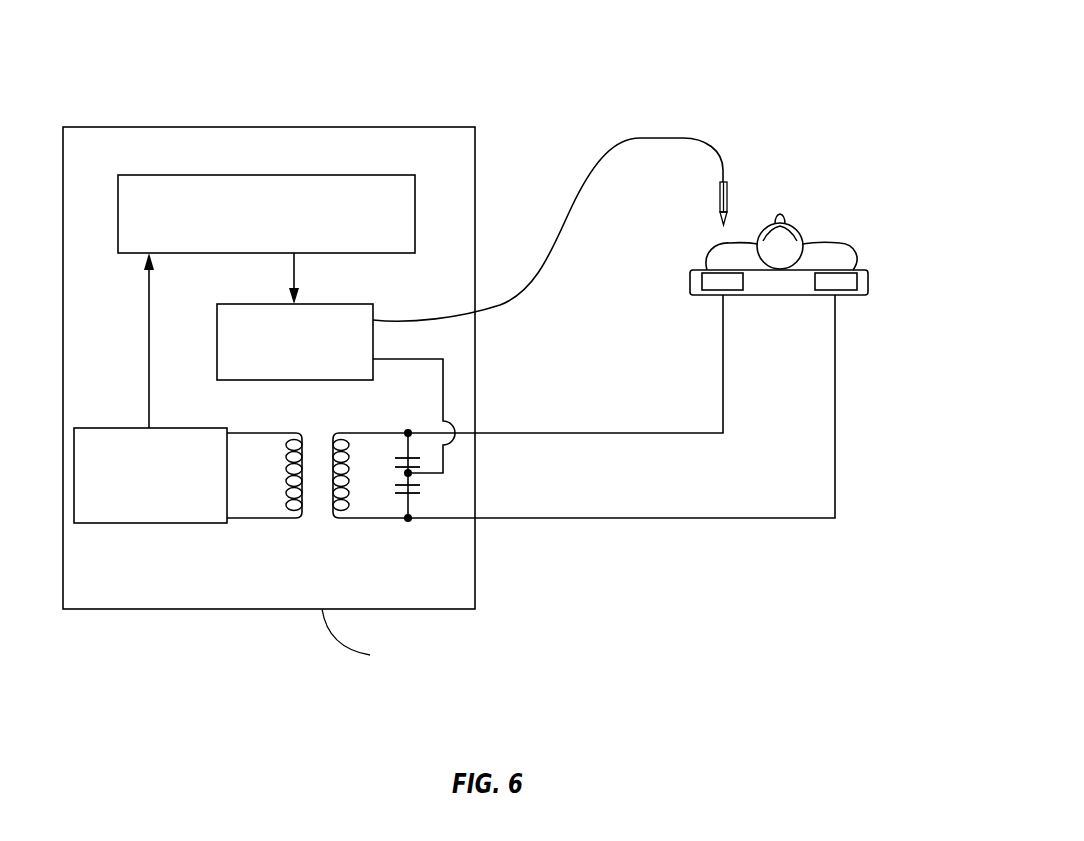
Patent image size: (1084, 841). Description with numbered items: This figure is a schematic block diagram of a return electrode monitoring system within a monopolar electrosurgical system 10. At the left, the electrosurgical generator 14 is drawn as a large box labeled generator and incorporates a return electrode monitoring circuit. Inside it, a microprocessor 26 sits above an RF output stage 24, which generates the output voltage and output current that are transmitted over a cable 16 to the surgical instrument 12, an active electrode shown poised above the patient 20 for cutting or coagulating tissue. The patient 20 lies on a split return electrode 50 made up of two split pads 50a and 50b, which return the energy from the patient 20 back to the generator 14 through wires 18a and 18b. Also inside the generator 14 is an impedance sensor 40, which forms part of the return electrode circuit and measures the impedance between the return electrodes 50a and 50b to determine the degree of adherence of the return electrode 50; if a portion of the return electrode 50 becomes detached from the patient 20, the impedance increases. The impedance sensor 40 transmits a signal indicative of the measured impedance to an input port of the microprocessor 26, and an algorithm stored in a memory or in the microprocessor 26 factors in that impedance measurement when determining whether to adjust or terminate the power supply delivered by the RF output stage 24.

The monopolar electrosurgical system 10 is at (607, 71).
The surgical instrument 12 is at (732, 194).
The electrosurgical generator 14 is at (149, 644).
The cable 16 is at (637, 138).
The wire 18a is at (650, 433).
The wire 18b is at (773, 518).
The patient 20 is at (842, 252).
The RF output stage 24 is at (242, 304).
The microprocessor 26 is at (293, 176).
The impedance sensor 40 is at (162, 523).
The return electrode 50 is at (853, 297).
The split pad 50a is at (700, 283).
The split pad 50b is at (857, 288).